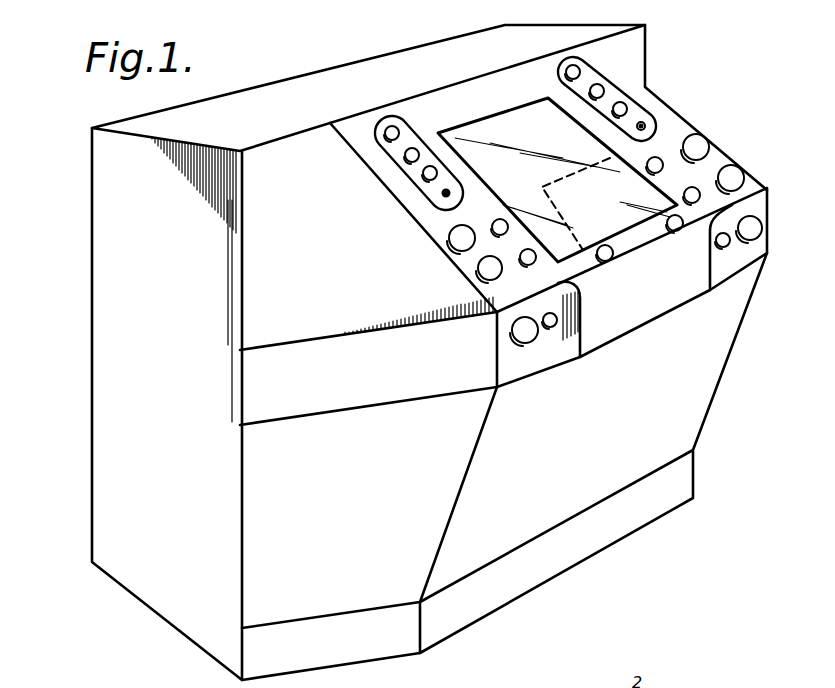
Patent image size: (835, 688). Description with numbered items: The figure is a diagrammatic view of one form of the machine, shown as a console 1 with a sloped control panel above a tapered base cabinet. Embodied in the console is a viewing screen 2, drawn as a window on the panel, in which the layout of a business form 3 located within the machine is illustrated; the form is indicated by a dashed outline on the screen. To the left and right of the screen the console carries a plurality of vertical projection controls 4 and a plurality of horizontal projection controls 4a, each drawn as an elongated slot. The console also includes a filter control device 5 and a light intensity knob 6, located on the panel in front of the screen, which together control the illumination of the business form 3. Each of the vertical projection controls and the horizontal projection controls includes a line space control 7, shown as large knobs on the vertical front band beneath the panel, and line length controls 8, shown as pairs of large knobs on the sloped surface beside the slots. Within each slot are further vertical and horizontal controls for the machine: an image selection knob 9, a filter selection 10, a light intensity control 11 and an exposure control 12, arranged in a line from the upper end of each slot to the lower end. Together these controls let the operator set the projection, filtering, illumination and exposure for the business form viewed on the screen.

The console 1 is at (166, 436).
The viewing screen 2 is at (500, 189).
The business form 3 is at (581, 229).
The vertical projection controls 4 is at (380, 112).
The horizontal projection controls 4a is at (555, 58).
The filter control device 5 is at (606, 261).
The light intensity knob 6 is at (672, 231).
The line space control 7 is at (527, 338).
The line length controls 8 is at (480, 265).
The image selection knob 9 is at (385, 137).
The filter selection 10 is at (405, 159).
The light intensity control 11 is at (423, 176).
The exposure control 12 is at (442, 195).